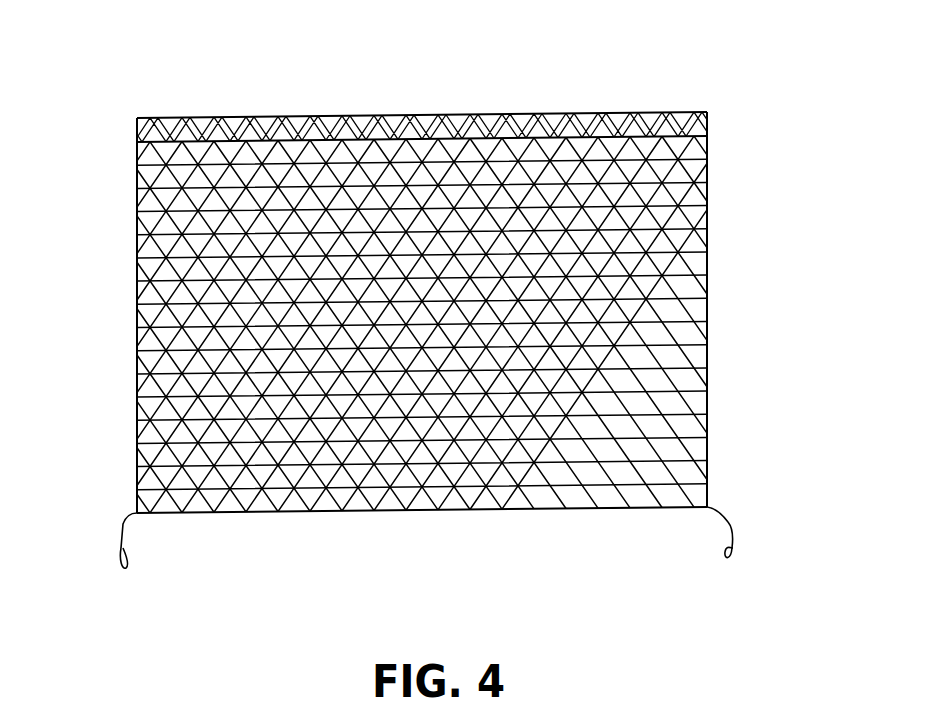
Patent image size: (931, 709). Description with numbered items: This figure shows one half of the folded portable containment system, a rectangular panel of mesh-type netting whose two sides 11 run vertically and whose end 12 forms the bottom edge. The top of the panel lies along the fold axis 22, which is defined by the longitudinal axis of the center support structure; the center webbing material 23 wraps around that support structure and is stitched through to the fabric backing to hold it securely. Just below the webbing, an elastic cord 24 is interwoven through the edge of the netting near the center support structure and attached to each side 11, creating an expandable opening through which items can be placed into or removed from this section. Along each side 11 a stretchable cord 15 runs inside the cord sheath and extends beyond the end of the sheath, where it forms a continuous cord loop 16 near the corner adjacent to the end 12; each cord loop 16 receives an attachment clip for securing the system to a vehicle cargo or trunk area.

The side 11 is at (137, 315).
The end 12 is at (393, 511).
The stretchable cord 15 is at (118, 532).
The cord loop 16 is at (118, 566).
The fold axis 22 is at (724, 129).
The center webbing material 23 is at (413, 127).
The elastic cord 24 is at (180, 143).